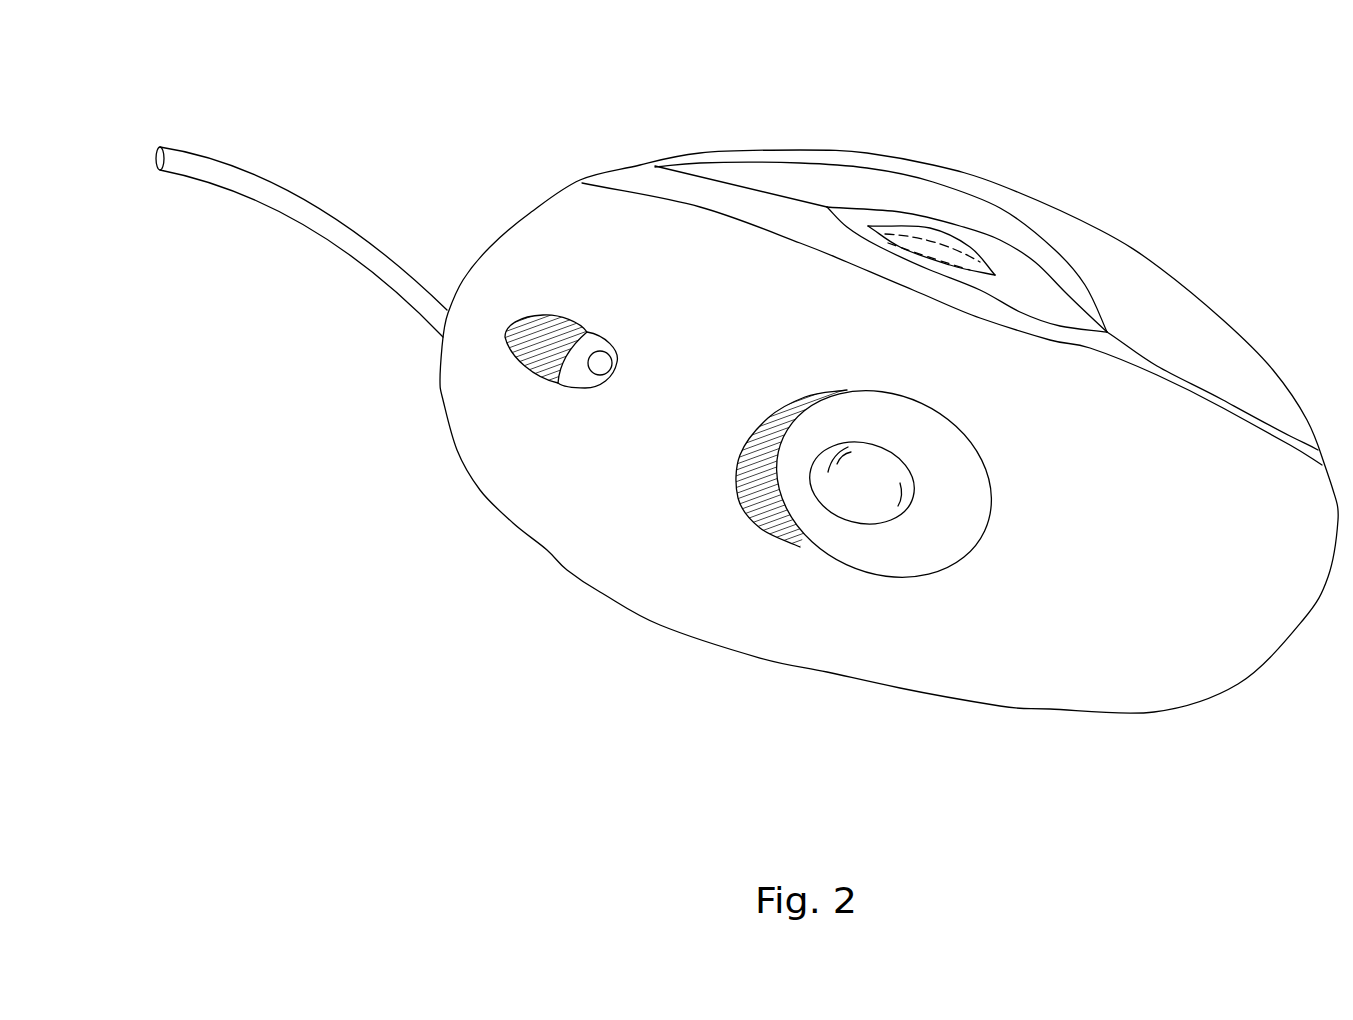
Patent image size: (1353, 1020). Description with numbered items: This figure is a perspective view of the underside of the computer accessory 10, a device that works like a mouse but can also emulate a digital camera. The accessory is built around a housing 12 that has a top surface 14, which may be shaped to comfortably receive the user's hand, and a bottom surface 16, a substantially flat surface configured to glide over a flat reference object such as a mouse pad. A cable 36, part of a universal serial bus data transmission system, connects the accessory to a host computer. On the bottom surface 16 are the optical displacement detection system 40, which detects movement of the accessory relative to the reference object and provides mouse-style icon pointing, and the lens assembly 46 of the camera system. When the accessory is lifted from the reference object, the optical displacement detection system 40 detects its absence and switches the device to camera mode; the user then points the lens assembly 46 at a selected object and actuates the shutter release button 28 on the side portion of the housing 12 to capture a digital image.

The computer accessory 10 is at (300, 94).
The housing 12 is at (625, 166).
The top surface 14 is at (877, 152).
The bottom surface 16 is at (1160, 572).
The shutter release button 28 is at (900, 245).
The cable 36 is at (277, 210).
The optical displacement detection system 40 is at (583, 387).
The lens assembly 46 is at (863, 533).